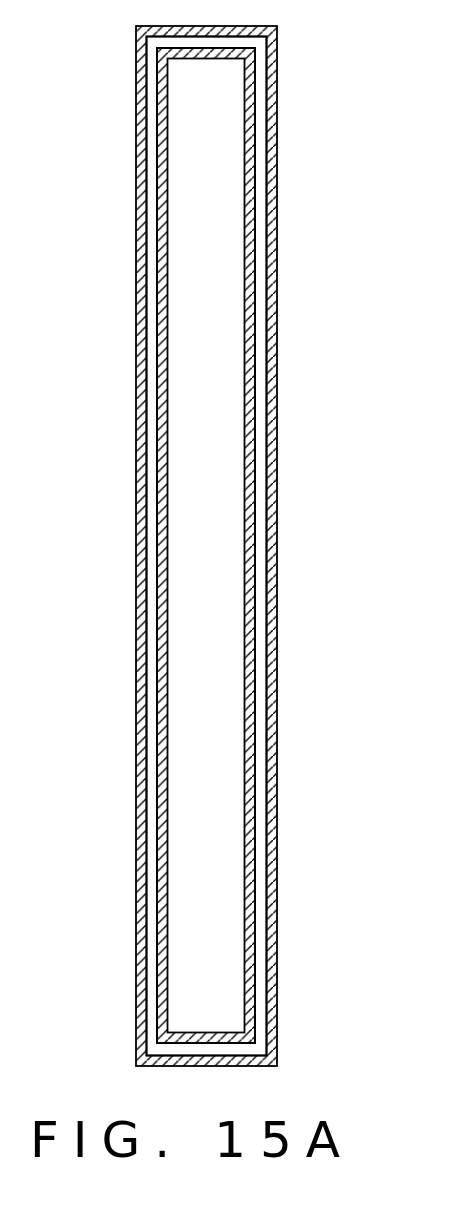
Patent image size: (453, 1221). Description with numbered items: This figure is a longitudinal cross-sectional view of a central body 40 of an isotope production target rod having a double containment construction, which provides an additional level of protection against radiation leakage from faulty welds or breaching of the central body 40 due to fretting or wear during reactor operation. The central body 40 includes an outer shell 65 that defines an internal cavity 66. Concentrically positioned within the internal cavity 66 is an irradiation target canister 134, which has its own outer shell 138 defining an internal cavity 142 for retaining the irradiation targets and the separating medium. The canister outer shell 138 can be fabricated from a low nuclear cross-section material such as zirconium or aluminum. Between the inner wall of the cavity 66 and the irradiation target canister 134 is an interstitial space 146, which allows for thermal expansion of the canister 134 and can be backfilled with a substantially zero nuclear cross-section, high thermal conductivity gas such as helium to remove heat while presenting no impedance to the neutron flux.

The central body 40 is at (239, 546).
The outer shell 65 is at (273, 230).
The internal cavity 66 is at (273, 303).
The irradiation target canister 134 is at (255, 410).
The outer shell 138 is at (250, 500).
The internal cavity 142 is at (210, 440).
The interstitial space 146 is at (258, 585).